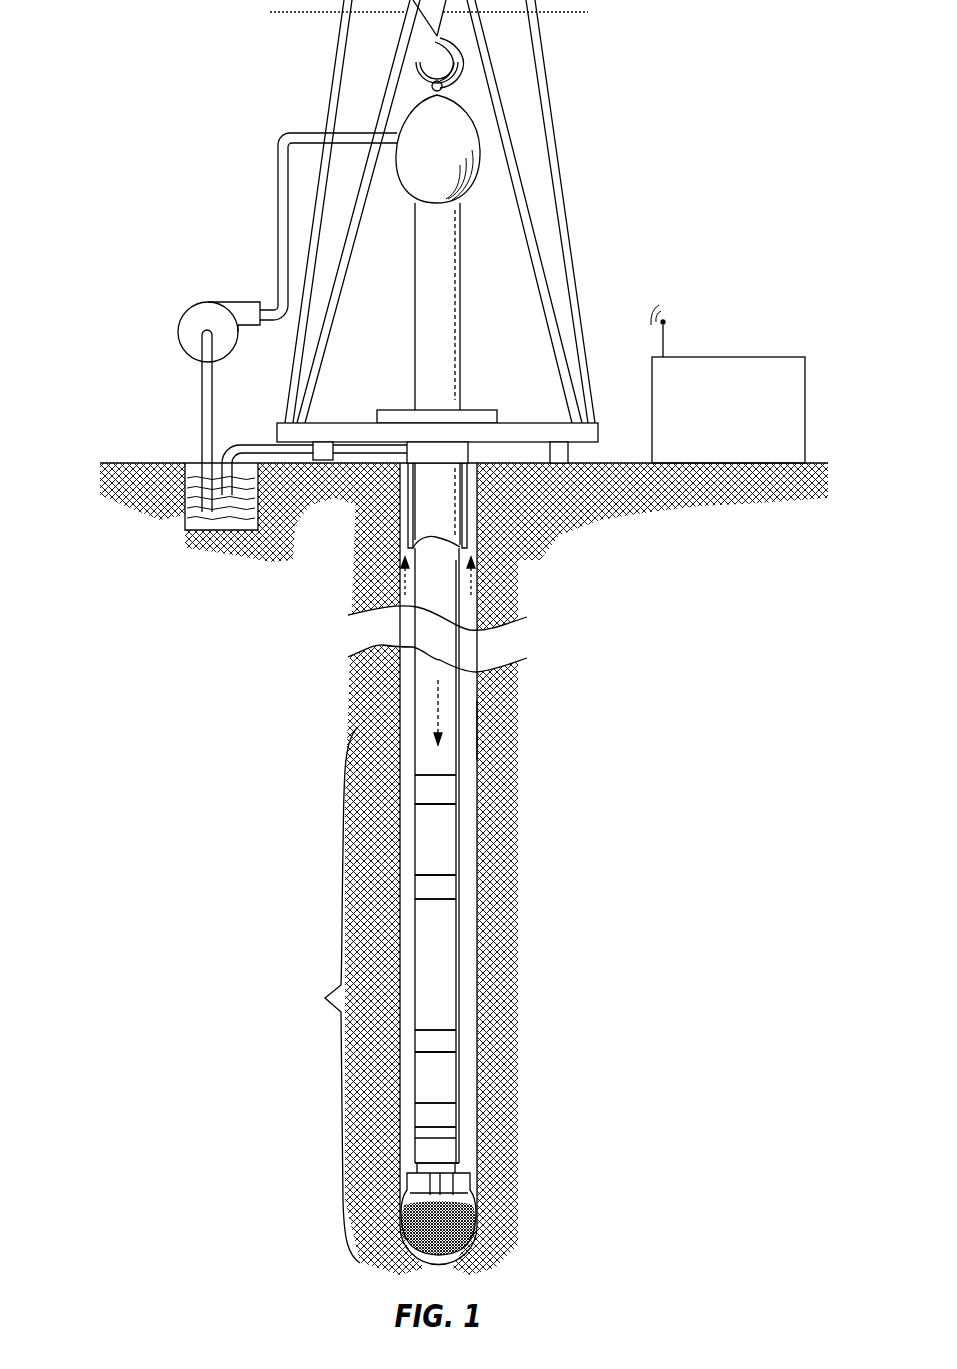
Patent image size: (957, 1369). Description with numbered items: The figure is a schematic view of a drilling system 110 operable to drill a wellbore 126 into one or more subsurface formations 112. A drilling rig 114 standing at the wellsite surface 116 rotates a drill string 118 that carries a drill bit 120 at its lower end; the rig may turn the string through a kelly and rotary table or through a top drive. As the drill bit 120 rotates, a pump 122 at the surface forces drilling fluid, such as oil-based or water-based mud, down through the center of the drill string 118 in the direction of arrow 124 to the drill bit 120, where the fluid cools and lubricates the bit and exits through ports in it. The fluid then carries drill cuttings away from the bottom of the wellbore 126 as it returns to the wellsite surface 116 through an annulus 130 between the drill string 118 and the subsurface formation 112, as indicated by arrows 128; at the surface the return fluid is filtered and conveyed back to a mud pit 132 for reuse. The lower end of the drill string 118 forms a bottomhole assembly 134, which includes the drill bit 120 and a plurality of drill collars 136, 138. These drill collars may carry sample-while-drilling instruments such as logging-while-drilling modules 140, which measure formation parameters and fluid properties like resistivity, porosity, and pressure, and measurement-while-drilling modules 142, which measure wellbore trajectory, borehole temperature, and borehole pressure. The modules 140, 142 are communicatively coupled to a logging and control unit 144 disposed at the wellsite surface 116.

The drilling system 110 is at (203, 76).
The subsurface formation 112 is at (697, 505).
The drilling rig 114 is at (570, 110).
The wellsite surface 116 is at (600, 462).
The drill string 118 is at (486, 756).
The drill bit 120 is at (472, 1212).
The pump 122 is at (177, 332).
The arrow 124 is at (438, 703).
The wellbore 126 is at (470, 732).
The arrows 128 is at (405, 585).
The annulus 130 is at (468, 786).
The mud pit 132 is at (216, 526).
The bottomhole assembly 134 is at (320, 995).
The drill collar 136 is at (463, 837).
The drill collar 138 is at (458, 1090).
The logging-while-drilling module 140 is at (458, 863).
The measurement-while-drilling module 142 is at (452, 797).
The logging and control unit 144 is at (727, 357).